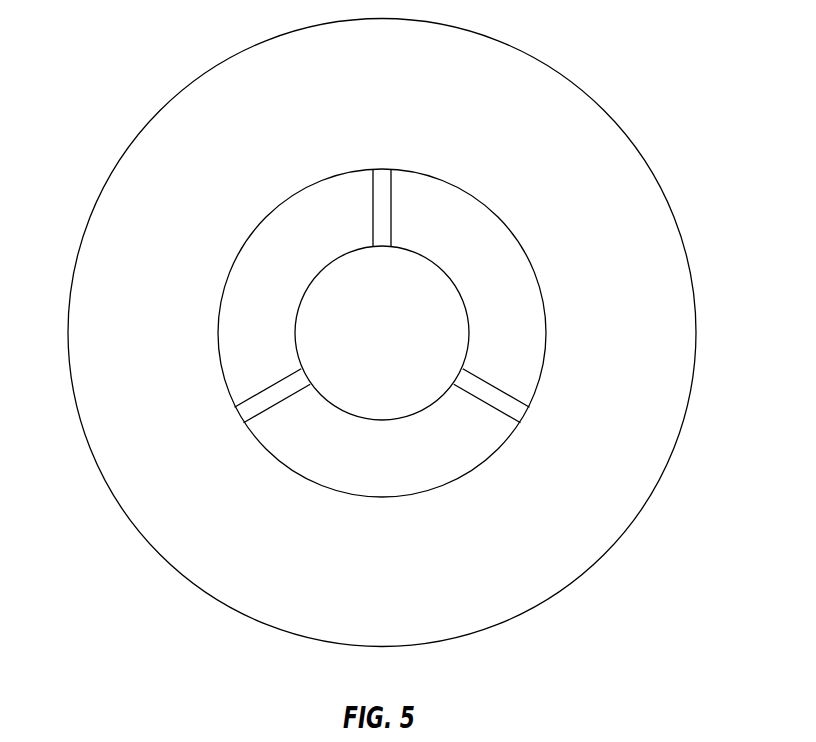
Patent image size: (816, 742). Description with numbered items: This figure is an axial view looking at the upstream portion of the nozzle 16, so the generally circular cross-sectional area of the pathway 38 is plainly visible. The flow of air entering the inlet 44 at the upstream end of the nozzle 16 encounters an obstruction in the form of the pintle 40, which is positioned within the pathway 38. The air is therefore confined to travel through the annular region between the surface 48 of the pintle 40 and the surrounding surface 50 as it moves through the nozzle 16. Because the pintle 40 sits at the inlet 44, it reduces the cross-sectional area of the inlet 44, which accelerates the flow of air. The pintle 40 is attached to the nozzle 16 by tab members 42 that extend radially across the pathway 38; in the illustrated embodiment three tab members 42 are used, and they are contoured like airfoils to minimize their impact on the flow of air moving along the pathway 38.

The nozzle 16 is at (624, 131).
The pathway 38 is at (290, 279).
The pintle 40 is at (286, 529).
The tab members 42 is at (370, 208).
The inlet 44 is at (242, 242).
The surface 48 is at (468, 333).
The surface 50 is at (482, 204).